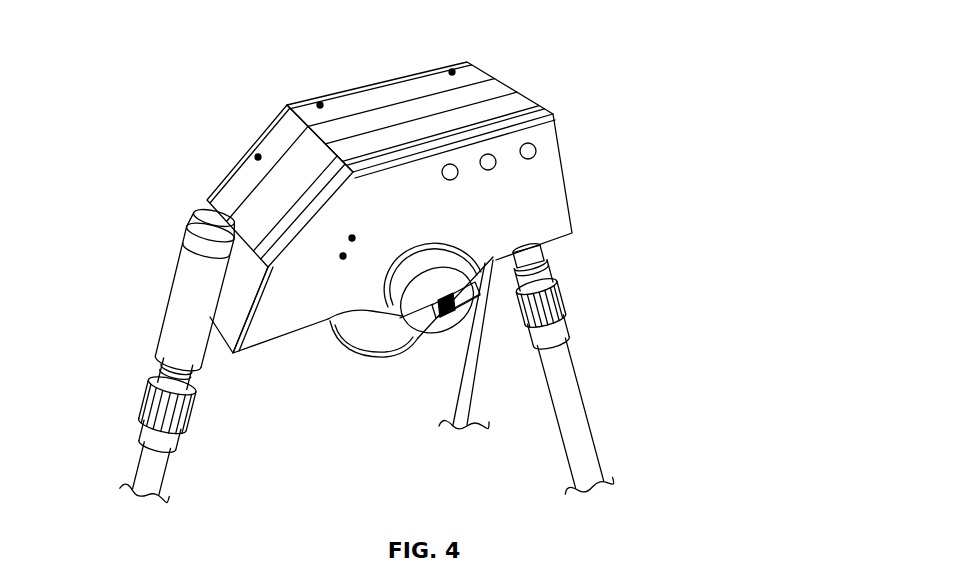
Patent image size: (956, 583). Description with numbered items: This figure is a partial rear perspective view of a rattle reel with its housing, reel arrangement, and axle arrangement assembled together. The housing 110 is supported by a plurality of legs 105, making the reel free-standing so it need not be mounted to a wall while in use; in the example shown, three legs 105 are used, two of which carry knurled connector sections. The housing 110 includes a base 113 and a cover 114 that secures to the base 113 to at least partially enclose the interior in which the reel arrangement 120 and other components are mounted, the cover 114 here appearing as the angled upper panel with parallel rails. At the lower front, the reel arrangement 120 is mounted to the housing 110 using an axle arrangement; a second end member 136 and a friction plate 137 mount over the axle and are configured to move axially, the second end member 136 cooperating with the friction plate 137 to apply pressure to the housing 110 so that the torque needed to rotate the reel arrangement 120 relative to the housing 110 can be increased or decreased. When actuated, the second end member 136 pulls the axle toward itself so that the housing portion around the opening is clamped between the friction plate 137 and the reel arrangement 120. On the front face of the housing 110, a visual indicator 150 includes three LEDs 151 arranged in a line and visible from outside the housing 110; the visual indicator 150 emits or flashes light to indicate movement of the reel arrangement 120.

The legs 105 is at (135, 470).
The housing 110 is at (388, 80).
The base 113 is at (280, 318).
The cover 114 is at (457, 62).
The reel arrangement 120 is at (370, 358).
The second end member 136 is at (440, 248).
The friction plate 137 is at (433, 255).
The visual indicator 150 is at (409, 154).
The LEDs 151 is at (442, 173).